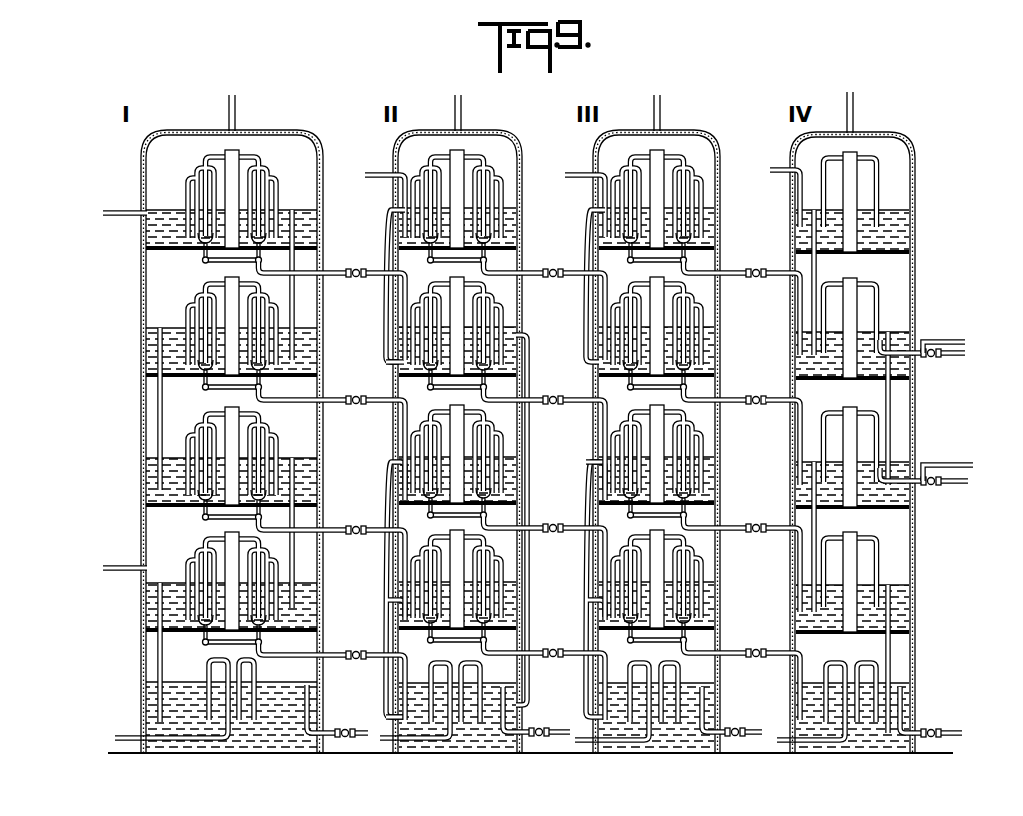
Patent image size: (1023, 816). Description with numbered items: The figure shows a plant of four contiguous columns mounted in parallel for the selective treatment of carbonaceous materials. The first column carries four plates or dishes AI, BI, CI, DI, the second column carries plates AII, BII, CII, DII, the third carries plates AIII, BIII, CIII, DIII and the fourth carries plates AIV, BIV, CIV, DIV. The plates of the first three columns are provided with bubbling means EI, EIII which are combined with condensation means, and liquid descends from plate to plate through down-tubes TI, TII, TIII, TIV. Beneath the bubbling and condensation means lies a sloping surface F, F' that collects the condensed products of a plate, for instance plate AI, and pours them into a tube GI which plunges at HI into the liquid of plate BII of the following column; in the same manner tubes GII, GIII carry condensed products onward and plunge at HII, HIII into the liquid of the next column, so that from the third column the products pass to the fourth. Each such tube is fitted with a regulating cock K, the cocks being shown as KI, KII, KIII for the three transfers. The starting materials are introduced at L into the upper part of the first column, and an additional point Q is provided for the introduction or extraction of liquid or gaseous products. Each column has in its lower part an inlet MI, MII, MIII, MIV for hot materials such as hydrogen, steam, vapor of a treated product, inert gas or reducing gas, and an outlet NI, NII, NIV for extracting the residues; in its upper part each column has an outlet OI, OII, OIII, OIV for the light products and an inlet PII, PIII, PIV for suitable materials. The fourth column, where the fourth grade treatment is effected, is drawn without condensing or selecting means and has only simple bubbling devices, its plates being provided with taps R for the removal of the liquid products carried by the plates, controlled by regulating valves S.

The outlet for light products of column I OI is at (237, 112).
The outlet for light products of column II OII is at (462, 112).
The outlet for light products of column III OIII is at (662, 112).
The outlet for light products of column IV OIV is at (855, 112).
The bubbling means of column I EI is at (192, 440).
The bubbling means of column III EIII is at (697, 177).
The first plate of column I AI is at (158, 252).
The second plate of column I BI is at (157, 380).
The third plate of column I CI is at (150, 508).
The fourth plate of column I DI is at (150, 630).
The first plate of column II AII is at (500, 248).
The second plate of column II BII is at (500, 378).
The third plate of column II CII is at (500, 504).
The fourth plate of column II DII is at (500, 628).
The first plate of column III AIII is at (700, 250).
The second plate of column III BIII is at (703, 378).
The third plate of column III CIII is at (697, 505).
The fourth plate of column III DIII is at (697, 632).
The first plate of column IV AIV is at (893, 255).
The second plate of column IV BIV is at (893, 380).
The third plate of column IV CIV is at (893, 512).
The fourth plate of column IV DIV is at (893, 630).
The down-tube of column I TI is at (162, 667).
The down-tube of column II TII is at (381, 600).
The down-tube of column III TIII is at (718, 340).
The down-tube of column IV TIV is at (893, 428).
The starting materials inlet L is at (110, 222).
The auxiliary inlet Q is at (112, 571).
The inlet of column II PII is at (377, 170).
The inlet of column III PIII is at (577, 170).
The inlet of column IV PIV is at (781, 168).
The sloping surface F is at (338, 262).
The sloping surface F' is at (186, 650).
The regulating cock of column I tubes KI is at (358, 538).
The regulating cock K is at (358, 658).
The regulating cock of column II tubes KII is at (553, 278).
The regulating cock of column III tubes KIII is at (755, 278).
The tube from column I GI is at (382, 612).
The tube from column II GII is at (577, 407).
The tube from column III GIII is at (773, 407).
The plunging point of tube from column I HI is at (399, 712).
The plunging point of tube from column II HII is at (590, 470).
The plunging point of tube from column III HIII is at (793, 590).
The hot materials inlet of column I MI is at (205, 672).
The hot materials inlet of column II MII is at (487, 668).
The hot materials inlet of column III MIII is at (680, 677).
The hot materials inlet of column IV MIV is at (880, 670).
The residue outlet of column I NI is at (331, 742).
The residue outlet of column II NII is at (532, 728).
The residue outlet of column IV NIV is at (923, 715).
The tap R is at (941, 465).
The regulating valve S is at (937, 484).